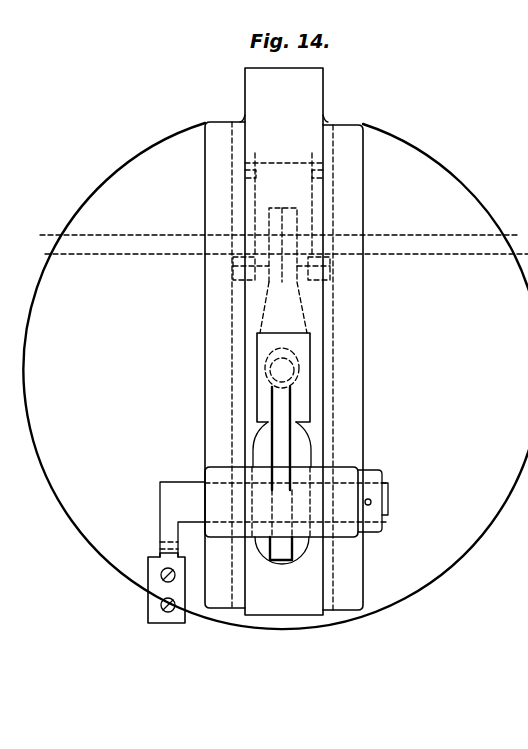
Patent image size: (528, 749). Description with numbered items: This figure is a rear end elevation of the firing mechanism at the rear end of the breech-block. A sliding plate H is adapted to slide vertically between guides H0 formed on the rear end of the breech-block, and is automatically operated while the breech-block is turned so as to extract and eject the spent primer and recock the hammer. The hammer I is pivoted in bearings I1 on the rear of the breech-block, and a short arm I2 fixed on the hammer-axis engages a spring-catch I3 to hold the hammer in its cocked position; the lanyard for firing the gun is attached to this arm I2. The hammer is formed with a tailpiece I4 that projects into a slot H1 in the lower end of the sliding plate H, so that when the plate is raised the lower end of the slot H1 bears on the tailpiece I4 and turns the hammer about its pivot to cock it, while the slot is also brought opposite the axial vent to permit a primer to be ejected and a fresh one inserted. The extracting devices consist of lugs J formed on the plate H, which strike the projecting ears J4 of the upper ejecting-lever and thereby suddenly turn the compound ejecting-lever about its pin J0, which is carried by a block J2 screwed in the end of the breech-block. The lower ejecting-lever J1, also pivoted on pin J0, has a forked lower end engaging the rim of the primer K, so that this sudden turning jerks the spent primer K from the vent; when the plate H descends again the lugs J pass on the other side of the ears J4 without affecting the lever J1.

The sliding plate H is at (284, 341).
The guides H0 is at (284, 366).
The slot H1 is at (309, 541).
The hammer I is at (282, 435).
The bearings I1 is at (296, 502).
The short arm I2 is at (181, 519).
The spring-catch I3 is at (166, 588).
The tailpiece I4 is at (281, 548).
The lugs J is at (330, 266).
The pin J0 is at (298, 256).
The ejecting-lever J1 is at (283, 307).
The block J2 is at (275, 376).
The projecting lug or ear J4 is at (243, 172).
The primer K is at (282, 368).